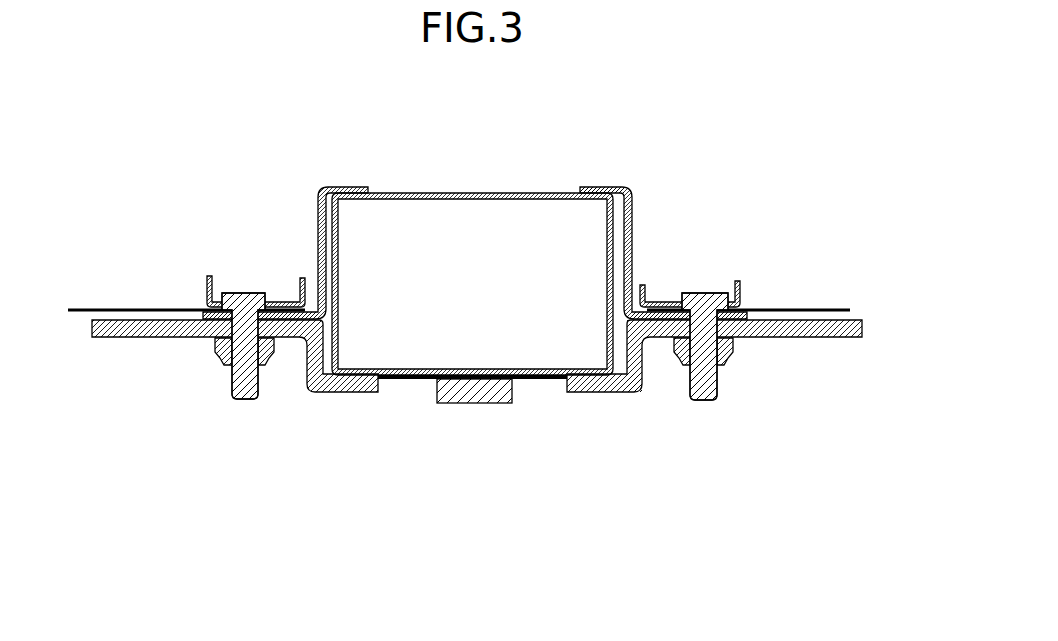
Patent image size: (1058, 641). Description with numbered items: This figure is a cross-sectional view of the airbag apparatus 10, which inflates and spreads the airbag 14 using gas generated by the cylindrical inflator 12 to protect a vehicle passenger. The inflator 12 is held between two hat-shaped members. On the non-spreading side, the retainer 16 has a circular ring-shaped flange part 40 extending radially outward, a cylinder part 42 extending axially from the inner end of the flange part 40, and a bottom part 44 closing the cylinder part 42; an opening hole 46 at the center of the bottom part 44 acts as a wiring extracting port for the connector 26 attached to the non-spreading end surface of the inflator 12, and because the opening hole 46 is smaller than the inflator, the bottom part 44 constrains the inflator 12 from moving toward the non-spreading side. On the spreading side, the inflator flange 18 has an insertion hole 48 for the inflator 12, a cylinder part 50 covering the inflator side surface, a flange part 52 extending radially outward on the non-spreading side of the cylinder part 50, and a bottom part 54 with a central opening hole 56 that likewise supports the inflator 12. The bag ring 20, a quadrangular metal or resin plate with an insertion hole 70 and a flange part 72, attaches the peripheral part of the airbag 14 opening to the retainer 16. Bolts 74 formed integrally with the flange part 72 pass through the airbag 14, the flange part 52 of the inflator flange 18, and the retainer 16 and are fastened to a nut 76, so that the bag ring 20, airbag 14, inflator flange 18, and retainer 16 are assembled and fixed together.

The airbag apparatus 10 is at (637, 149).
The inflator 12 is at (467, 193).
The airbag 14 is at (835, 308).
The retainer 16 is at (807, 393).
The inflator flange 18 is at (702, 165).
The bag ring 20 is at (741, 283).
The connector 26 is at (474, 404).
The flange part 40 is at (760, 338).
The cylinder part 42 is at (643, 363).
The bottom part 44 is at (597, 393).
The opening hole 46 is at (567, 382).
The insertion hole 48 is at (331, 287).
The cylinder part 50 is at (633, 222).
The flange part 52 is at (640, 302).
The bottom part 54 is at (601, 188).
The opening hole 56 is at (578, 187).
The insertion hole 70 is at (309, 296).
The flange part 72 is at (289, 300).
The bolt 74 is at (258, 397).
The nut 76 is at (218, 358).